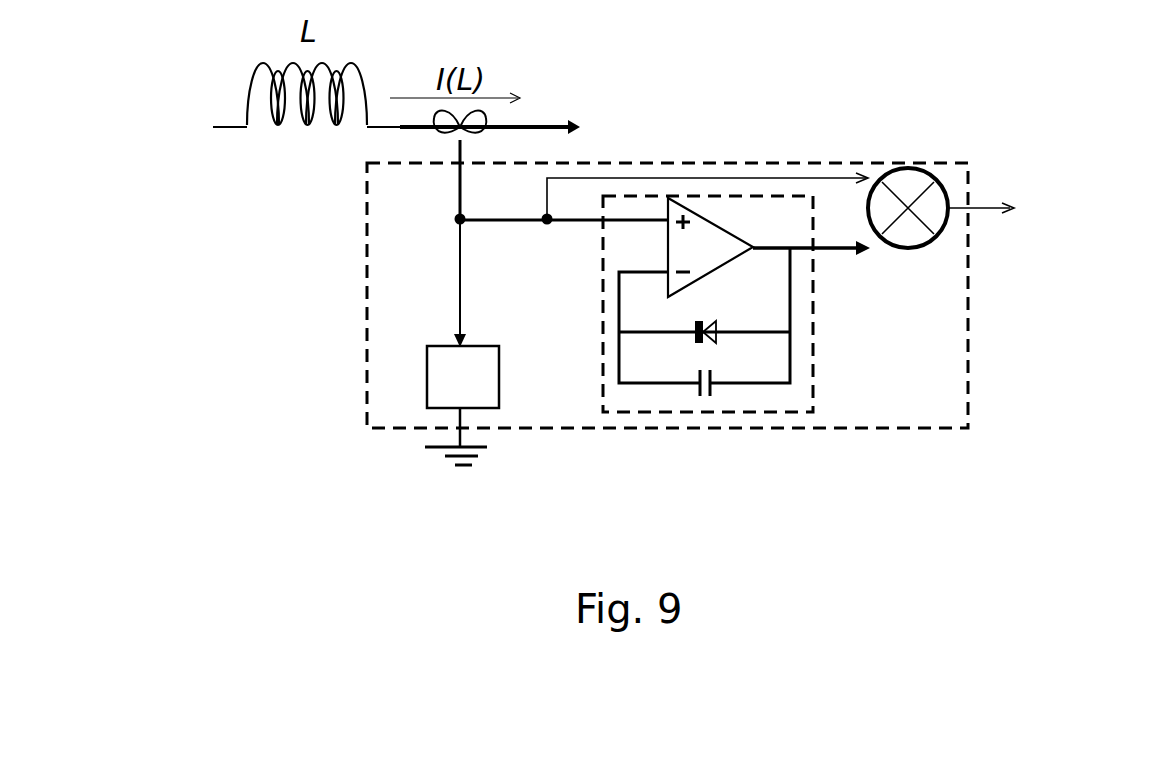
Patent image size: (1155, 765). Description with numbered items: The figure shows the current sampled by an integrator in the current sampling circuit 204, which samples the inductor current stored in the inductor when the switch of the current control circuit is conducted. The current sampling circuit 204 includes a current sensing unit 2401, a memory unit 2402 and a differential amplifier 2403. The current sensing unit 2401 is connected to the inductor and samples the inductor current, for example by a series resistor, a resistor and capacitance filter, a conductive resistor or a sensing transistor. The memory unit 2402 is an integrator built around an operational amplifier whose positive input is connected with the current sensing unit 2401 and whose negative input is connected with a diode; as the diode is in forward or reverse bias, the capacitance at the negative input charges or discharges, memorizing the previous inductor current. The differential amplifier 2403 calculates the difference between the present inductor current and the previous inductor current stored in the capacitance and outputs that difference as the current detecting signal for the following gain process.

The current sampling circuit 204 is at (726, 305).
The current sensing unit 2401 is at (499, 372).
The memory unit 2402 is at (742, 412).
The differential amplifier 2403 is at (905, 250).